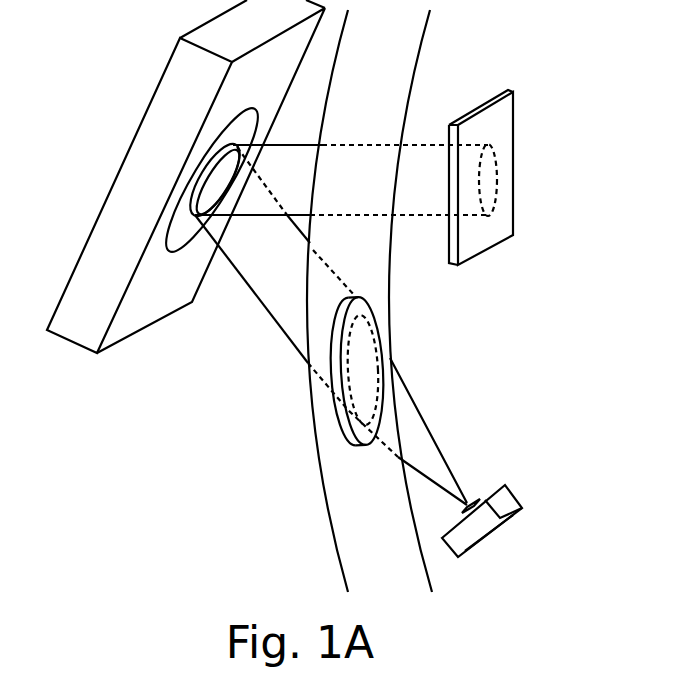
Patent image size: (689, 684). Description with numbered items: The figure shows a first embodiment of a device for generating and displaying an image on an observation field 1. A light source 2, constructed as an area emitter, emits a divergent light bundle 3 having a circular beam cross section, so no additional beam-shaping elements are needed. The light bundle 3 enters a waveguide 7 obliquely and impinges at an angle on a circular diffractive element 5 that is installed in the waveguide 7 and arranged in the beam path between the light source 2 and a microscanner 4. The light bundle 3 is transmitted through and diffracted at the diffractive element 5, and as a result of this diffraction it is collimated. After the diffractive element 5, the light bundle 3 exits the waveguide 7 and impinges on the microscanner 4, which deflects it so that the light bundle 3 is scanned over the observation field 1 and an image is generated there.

The observation field 1 is at (513, 122).
The light source 2 is at (521, 503).
The light bundle 3 is at (437, 443).
The microscanner 4 is at (150, 112).
The diffractive element 5 is at (378, 315).
The waveguide 7 is at (423, 50).